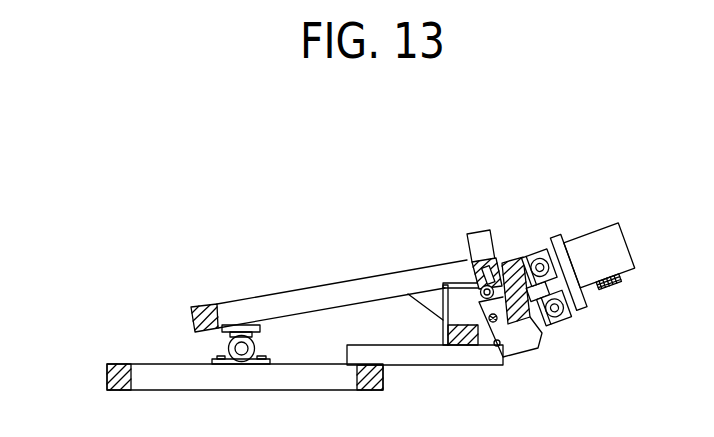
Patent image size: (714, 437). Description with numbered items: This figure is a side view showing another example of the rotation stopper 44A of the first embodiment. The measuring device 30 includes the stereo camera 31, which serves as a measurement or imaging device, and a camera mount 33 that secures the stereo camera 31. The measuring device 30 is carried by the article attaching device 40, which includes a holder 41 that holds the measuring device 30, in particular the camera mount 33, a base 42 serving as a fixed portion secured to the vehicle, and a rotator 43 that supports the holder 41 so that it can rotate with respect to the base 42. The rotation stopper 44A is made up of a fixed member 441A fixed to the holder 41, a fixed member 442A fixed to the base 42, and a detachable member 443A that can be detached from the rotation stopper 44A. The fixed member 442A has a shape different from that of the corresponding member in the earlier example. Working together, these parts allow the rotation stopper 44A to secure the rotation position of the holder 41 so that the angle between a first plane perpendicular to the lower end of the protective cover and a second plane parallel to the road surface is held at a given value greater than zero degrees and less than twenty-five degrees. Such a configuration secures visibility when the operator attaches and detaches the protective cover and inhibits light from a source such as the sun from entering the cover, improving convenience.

The measuring device 30 is at (498, 170).
The stereo camera 31 is at (598, 238).
The camera mount 33 is at (505, 262).
The article attaching device 40 is at (109, 253).
The holder 41 is at (205, 307).
The base 42 is at (110, 363).
The rotator 43 is at (218, 348).
The rotation stopper 44A is at (481, 169).
The fixed member 441A is at (482, 268).
The fixed member 442A is at (412, 305).
The detachable member 443A is at (438, 307).